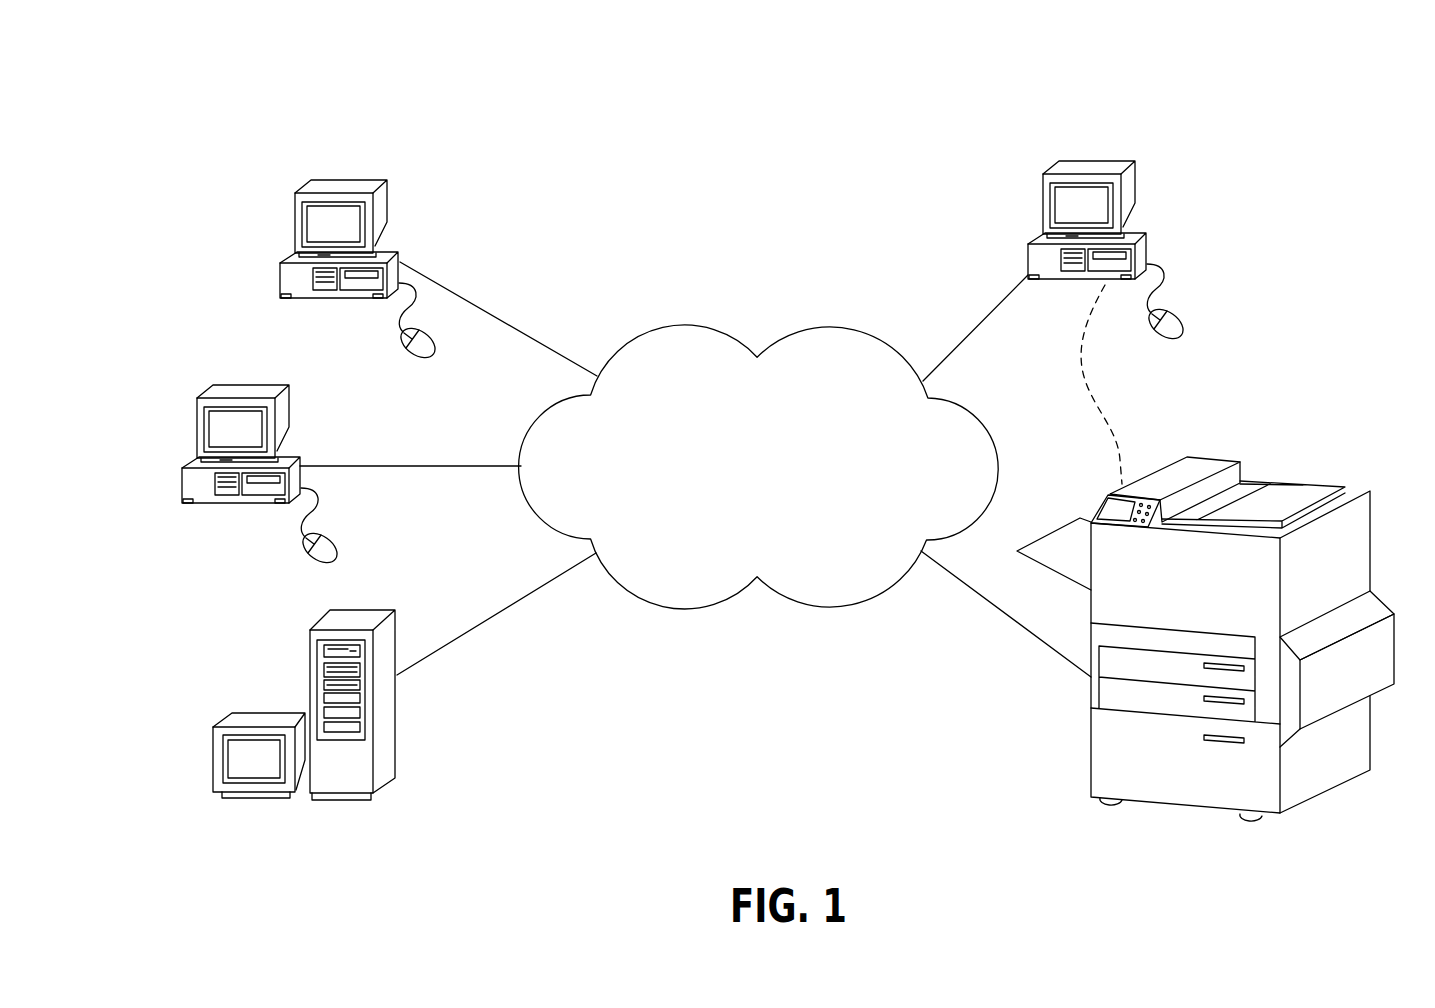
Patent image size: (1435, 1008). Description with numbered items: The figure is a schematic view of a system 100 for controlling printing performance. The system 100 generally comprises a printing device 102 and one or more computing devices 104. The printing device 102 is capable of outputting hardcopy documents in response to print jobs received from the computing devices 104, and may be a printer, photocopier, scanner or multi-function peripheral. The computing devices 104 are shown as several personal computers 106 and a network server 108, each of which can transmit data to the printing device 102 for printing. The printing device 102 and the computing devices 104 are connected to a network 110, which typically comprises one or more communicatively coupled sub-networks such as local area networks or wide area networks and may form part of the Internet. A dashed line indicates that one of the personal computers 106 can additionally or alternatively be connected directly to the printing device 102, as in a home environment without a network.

The system for controlling printing performance 100 is at (1352, 100).
The printing device 102 is at (1338, 454).
The computing devices 104 is at (414, 165).
The personal computers 106 is at (282, 284).
The network server 108 is at (382, 773).
The network 110 is at (777, 493).